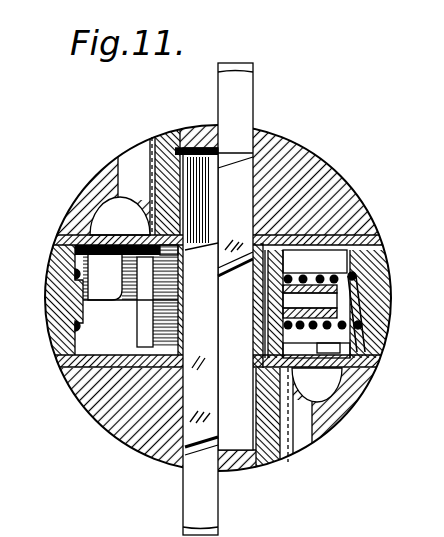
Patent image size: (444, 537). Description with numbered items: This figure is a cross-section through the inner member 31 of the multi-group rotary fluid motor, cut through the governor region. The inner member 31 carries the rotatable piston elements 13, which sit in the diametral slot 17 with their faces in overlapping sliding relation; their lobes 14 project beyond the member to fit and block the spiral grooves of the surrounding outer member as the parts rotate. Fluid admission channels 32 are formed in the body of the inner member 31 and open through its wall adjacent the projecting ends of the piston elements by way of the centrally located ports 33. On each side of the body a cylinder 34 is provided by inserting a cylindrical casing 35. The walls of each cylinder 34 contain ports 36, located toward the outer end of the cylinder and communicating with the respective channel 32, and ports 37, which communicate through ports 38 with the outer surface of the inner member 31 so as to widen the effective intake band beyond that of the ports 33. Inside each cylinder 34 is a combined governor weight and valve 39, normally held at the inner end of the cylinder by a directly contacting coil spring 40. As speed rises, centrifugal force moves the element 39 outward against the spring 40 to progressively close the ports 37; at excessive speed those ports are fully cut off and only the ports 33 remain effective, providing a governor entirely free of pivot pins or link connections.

The piston element 13 is at (233, 229).
The lobe 14 is at (246, 93).
The diametral slot 17 is at (258, 416).
The inner member 31 is at (295, 163).
The fluid admission channel 32 is at (115, 212).
The port 33 is at (144, 147).
The cylinder 34 is at (380, 245).
The cylindrical casing 35 is at (63, 315).
The port 36 is at (98, 264).
The port 37 is at (147, 325).
The port 38 is at (173, 140).
The combined governor weight and valve 39 is at (287, 258).
The coil spring 40 is at (360, 276).